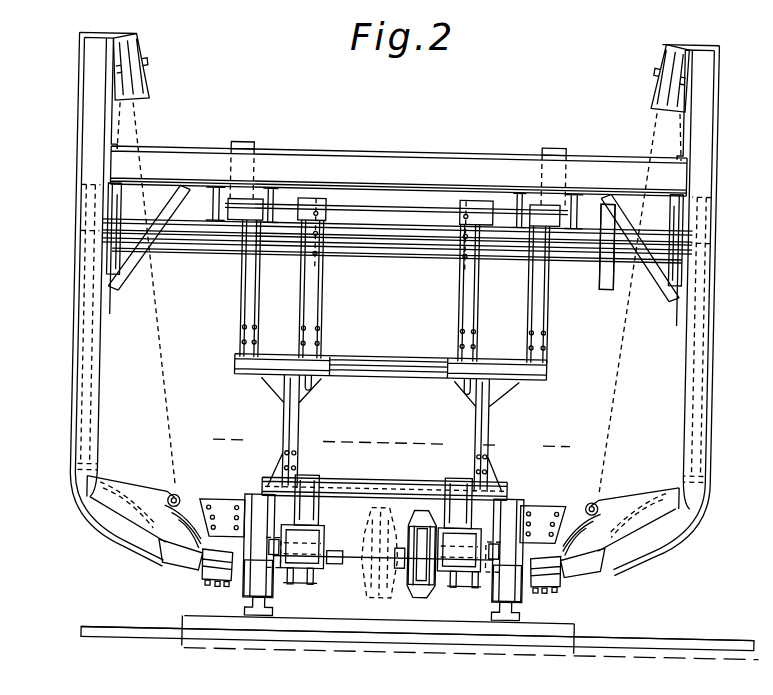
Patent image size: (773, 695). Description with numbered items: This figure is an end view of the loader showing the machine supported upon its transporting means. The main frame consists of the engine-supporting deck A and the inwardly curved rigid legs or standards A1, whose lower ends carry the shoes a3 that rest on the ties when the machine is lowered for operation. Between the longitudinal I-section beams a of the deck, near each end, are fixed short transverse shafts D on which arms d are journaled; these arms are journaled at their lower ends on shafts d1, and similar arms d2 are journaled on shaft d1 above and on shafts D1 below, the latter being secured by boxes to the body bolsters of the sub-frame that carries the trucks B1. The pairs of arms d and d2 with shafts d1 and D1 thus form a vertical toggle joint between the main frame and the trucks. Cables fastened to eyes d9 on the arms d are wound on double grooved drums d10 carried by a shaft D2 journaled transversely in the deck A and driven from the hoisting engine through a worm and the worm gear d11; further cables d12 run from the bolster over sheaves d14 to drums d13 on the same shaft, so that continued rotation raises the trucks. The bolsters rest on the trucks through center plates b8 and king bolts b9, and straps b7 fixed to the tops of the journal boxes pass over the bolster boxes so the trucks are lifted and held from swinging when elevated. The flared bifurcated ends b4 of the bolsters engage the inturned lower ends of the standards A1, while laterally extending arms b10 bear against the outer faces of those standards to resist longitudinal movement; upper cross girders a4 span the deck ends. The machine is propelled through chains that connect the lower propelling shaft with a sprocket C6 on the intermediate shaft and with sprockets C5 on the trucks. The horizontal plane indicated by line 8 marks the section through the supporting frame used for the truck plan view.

The legs or standards A1 is at (719, 430).
The sheaves d14 is at (136, 81).
The cables d12 is at (158, 341).
The double grooved drums d13 is at (107, 274).
The engine-supporting platform or deck A is at (386, 152).
The upper cross girders a4 is at (398, 174).
The short transverse shafts D is at (394, 207).
The shaft D2 is at (377, 248).
The longitudinal beams a is at (83, 203).
The arms d is at (300, 311).
The double grooved drums d10 is at (323, 266).
The shafts d1 is at (735, 264).
The eyes d9 is at (312, 390).
The arms d2 is at (503, 430).
The line 8— 8 is at (214, 442).
The straps b7 is at (313, 477).
The shafts D1 is at (390, 480).
The sprocket C6 is at (395, 508).
The trucks B1 is at (343, 564).
The king bolts b9 is at (383, 568).
The center plates b8 is at (402, 582).
The sprockets C5 is at (425, 593).
The worm gear d11 is at (609, 287).
The outer bifurcated ends b4 is at (613, 509).
The arms b10 is at (715, 492).
The shoes a3 is at (582, 590).